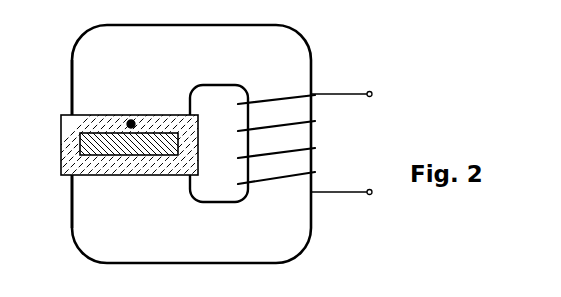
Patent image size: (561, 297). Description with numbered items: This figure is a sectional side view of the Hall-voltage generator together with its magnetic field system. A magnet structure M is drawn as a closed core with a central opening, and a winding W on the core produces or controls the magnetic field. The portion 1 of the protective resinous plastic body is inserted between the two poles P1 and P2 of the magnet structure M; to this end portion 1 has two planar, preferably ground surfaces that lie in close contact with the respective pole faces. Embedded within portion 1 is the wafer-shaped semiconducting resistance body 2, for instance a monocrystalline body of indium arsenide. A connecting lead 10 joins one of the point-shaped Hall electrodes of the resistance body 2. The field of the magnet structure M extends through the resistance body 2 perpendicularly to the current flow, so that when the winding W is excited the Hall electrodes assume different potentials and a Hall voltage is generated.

The magnet structure M is at (287, 222).
The pole P1 is at (82, 67).
The pole P2 is at (85, 230).
The portion of the protective resinous body 1 is at (61, 128).
The resistance body 2 is at (87, 148).
The connecting lead 10 is at (132, 121).
The winding W is at (313, 146).